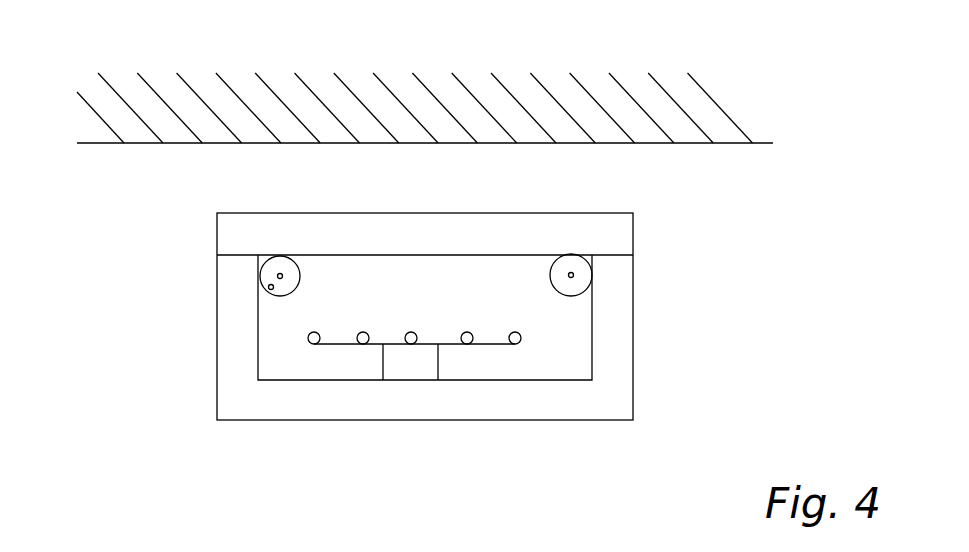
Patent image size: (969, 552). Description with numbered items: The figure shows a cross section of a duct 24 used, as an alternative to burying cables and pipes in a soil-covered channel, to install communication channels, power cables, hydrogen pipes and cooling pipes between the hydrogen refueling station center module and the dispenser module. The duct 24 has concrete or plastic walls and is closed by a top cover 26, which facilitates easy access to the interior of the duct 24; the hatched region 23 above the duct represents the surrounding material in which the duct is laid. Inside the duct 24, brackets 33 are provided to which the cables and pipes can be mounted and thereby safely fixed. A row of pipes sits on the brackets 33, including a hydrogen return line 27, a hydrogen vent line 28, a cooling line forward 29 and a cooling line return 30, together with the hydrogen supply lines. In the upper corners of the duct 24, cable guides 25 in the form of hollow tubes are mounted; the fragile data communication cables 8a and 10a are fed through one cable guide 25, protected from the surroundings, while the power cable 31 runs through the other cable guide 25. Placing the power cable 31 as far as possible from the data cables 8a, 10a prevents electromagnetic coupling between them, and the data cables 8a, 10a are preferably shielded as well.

The wall 23 is at (757, 143).
The top cover 26 is at (565, 228).
The duct 24 is at (328, 405).
The cable guide 25 is at (264, 258).
The cable 8a is at (278, 276).
The cable 10a is at (271, 287).
The power cable 31 is at (575, 275).
The bracket 33 is at (382, 347).
The hydrogen return line 27 is at (363, 344).
The hydrogen vent line 28 is at (411, 344).
The cooling line forward 29 is at (467, 344).
The cooling line return 30 is at (515, 344).